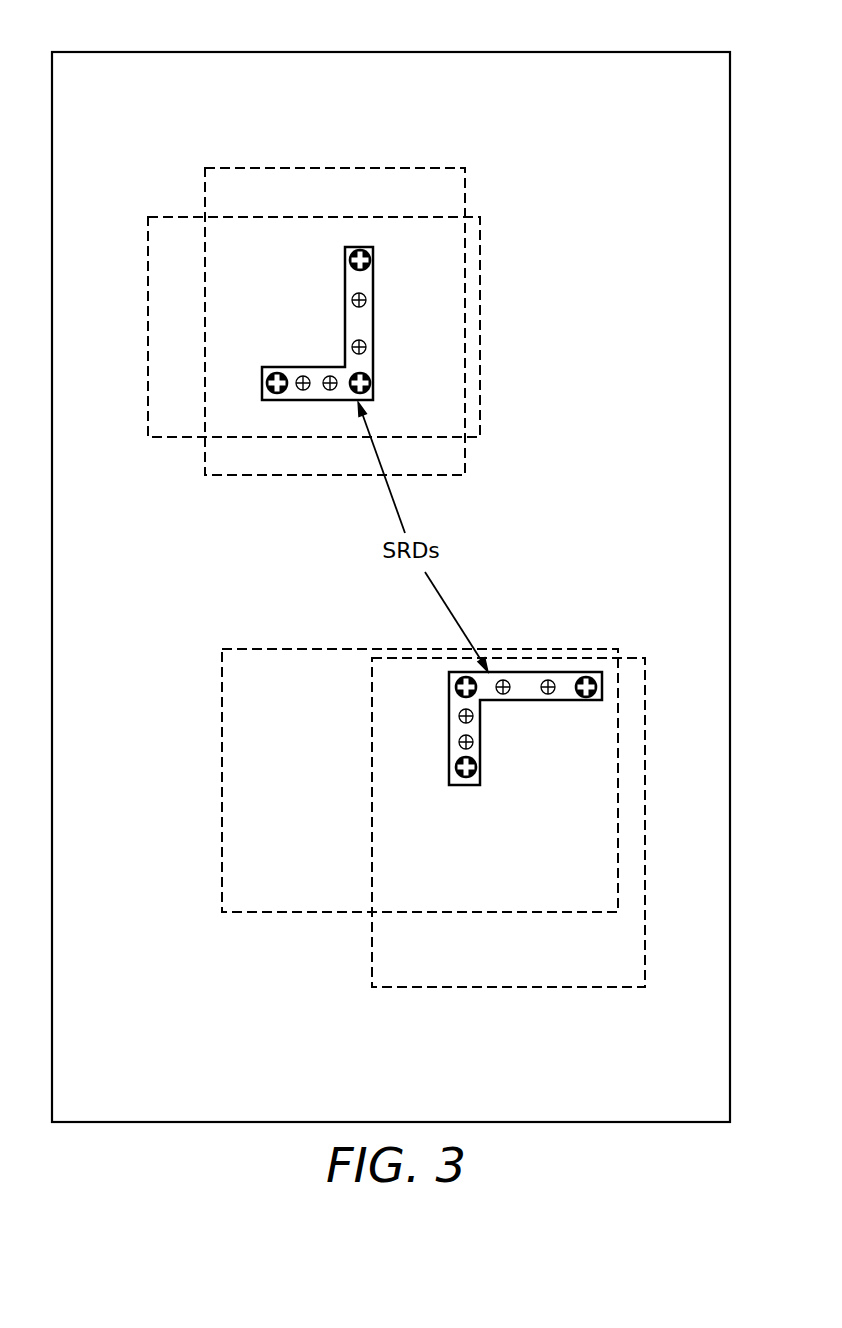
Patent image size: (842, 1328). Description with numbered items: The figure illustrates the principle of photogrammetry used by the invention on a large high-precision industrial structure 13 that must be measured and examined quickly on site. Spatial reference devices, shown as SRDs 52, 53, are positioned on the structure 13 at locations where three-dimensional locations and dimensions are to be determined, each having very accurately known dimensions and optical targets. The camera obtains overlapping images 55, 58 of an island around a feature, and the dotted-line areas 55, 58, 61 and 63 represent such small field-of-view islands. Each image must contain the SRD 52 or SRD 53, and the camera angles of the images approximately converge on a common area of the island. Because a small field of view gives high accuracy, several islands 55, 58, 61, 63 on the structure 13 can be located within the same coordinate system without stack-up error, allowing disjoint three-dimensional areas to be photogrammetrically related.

The industrial structure 13 is at (473, 52).
The island area 61 is at (385, 170).
The island area 63 is at (480, 297).
The spatial reference device (SRD) 53 is at (375, 340).
The overlapping image 58 is at (552, 650).
The overlapping image 55 is at (645, 769).
The spatial reference device (SRD) 52 is at (538, 700).